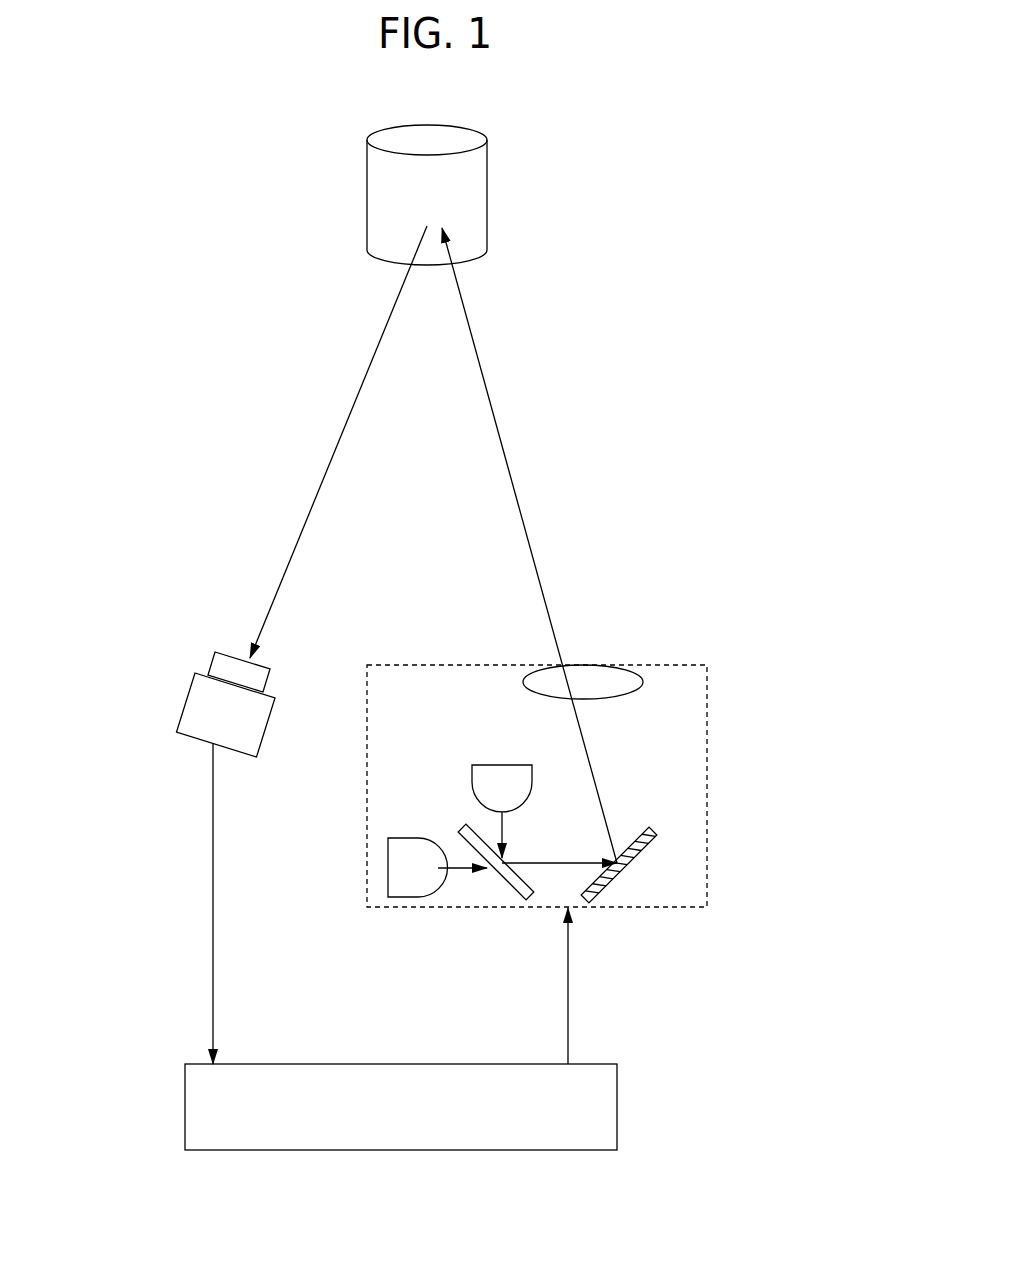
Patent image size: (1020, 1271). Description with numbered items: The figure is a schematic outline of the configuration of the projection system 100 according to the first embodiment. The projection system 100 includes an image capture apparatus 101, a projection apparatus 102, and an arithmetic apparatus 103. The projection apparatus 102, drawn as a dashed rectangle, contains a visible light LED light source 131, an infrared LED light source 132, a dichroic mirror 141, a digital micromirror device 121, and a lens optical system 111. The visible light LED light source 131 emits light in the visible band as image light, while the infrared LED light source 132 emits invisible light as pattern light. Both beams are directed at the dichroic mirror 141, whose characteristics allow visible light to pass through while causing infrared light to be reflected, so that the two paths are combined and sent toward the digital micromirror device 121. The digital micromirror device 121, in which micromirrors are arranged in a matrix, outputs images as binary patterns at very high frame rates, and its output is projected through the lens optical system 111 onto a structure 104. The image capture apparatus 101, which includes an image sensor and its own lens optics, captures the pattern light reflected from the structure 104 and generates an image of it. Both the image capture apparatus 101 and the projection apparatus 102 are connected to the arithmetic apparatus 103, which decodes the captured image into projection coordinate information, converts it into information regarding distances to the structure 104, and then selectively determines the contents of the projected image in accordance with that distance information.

The projection system 100 is at (145, 325).
The image capture apparatus 101 is at (205, 742).
The projection apparatus 102 is at (707, 823).
The arithmetic apparatus 103 is at (617, 1110).
The structure 104 is at (487, 190).
The lens optical system 111 is at (608, 677).
The digital micromirror device 121 is at (624, 880).
The visible light LED light source 131 is at (397, 898).
The infrared LED light source 132 is at (492, 762).
The dichroic mirror 141 is at (518, 902).